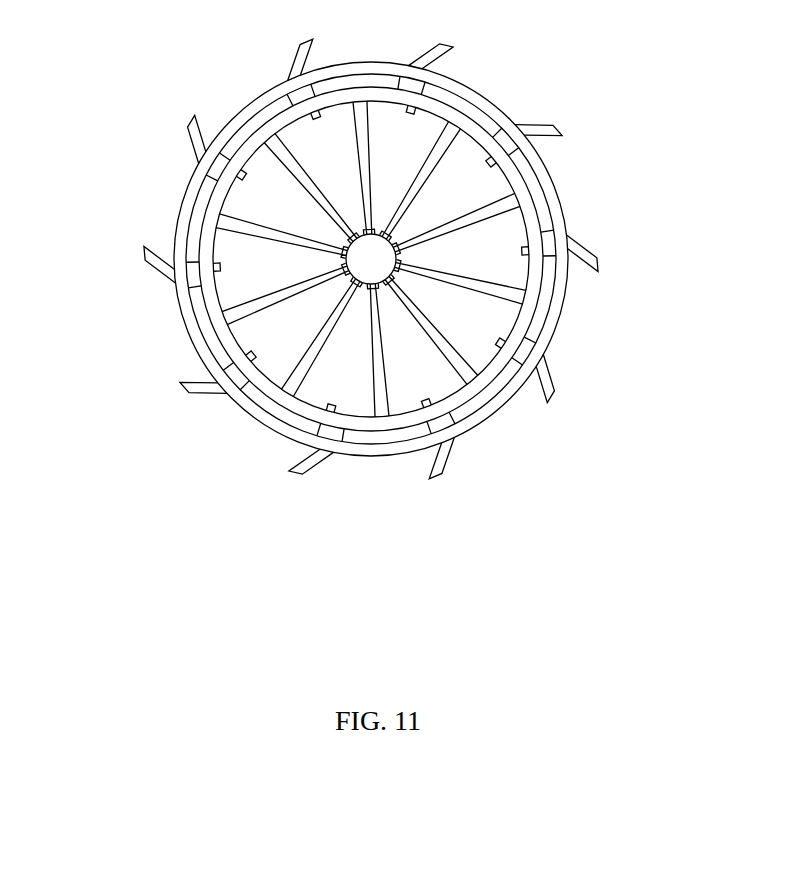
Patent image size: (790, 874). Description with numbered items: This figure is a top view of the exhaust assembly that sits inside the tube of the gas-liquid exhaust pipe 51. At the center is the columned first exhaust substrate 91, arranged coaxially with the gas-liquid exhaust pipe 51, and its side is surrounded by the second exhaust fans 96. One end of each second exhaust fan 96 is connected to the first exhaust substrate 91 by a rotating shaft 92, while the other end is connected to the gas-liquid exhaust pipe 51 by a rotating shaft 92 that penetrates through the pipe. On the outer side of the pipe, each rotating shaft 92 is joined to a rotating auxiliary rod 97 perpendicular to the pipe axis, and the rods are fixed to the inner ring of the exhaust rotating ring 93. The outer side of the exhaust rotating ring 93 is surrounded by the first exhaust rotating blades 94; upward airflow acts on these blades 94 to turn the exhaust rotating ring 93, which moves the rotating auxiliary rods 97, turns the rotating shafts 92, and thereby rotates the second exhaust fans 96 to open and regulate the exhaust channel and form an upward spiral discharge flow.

The gas-liquid exhaust pipe 51 is at (533, 213).
The first exhaust substrate 91 is at (373, 258).
The rotating shaft 92 is at (217, 263).
The exhaust rotating ring 93 is at (480, 97).
The first exhaust rotating blade 94 is at (563, 127).
The second exhaust fan 96 is at (492, 325).
The rotating auxiliary rod 97 is at (467, 425).